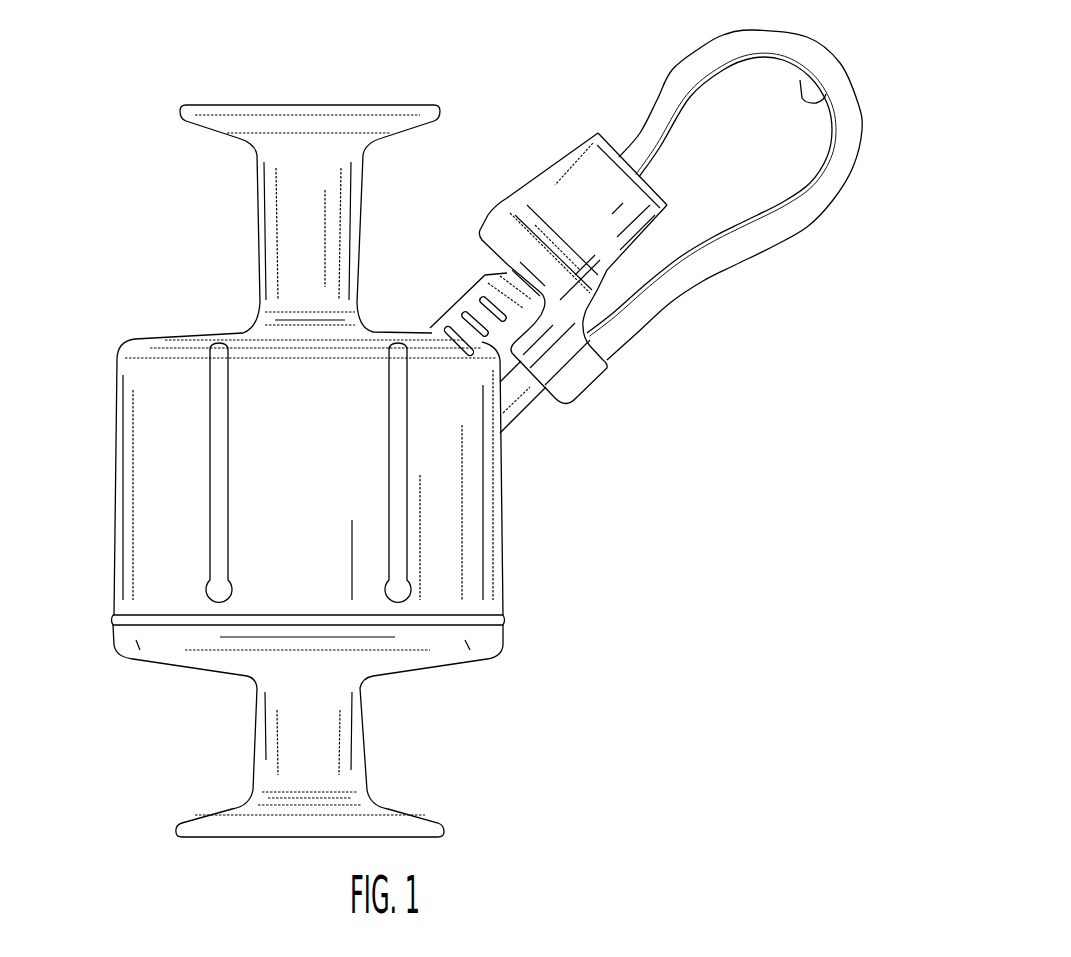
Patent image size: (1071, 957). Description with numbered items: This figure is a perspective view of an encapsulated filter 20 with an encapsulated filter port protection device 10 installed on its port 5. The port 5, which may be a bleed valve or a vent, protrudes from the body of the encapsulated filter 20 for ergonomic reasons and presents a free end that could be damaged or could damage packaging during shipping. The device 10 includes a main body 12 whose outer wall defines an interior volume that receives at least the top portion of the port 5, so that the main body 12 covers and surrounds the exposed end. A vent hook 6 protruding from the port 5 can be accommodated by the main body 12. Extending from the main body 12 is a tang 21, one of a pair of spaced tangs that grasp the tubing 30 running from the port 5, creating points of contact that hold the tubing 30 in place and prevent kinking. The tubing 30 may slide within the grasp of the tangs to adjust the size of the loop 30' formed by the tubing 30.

The port 5 is at (498, 258).
The vent hook 6 is at (517, 392).
The encapsulated filter port protection device 10 is at (548, 128).
The main body 12 is at (592, 162).
The encapsulated filter 20 is at (70, 310).
The tang 21 is at (583, 370).
The tubing 30 is at (724, 195).
The loop 30' is at (845, 56).